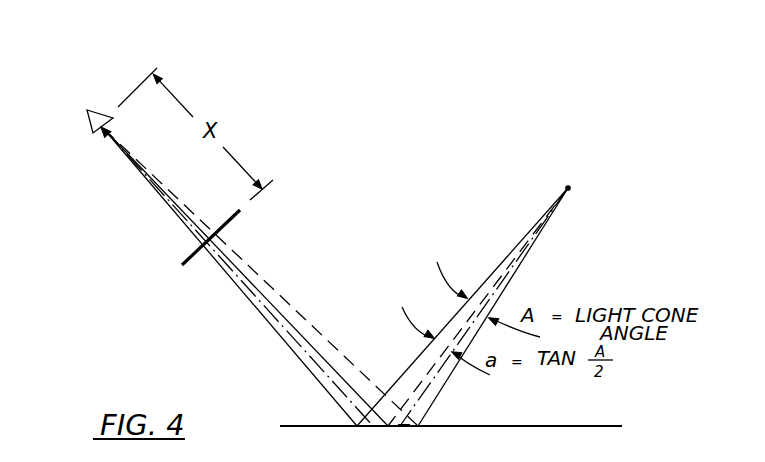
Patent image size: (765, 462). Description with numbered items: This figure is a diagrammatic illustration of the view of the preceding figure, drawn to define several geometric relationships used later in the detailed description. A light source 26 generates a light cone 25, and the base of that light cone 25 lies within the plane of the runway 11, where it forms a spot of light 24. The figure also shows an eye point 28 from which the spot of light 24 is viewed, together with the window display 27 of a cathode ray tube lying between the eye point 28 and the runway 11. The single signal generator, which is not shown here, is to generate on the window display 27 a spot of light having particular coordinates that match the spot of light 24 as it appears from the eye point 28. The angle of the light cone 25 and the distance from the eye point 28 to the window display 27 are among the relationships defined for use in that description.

The runway 11 is at (594, 424).
The spot of light 24 is at (404, 425).
The light cone 25 is at (494, 303).
The light source 26 is at (568, 188).
The window display 27 is at (181, 258).
The eye point 28 is at (101, 111).